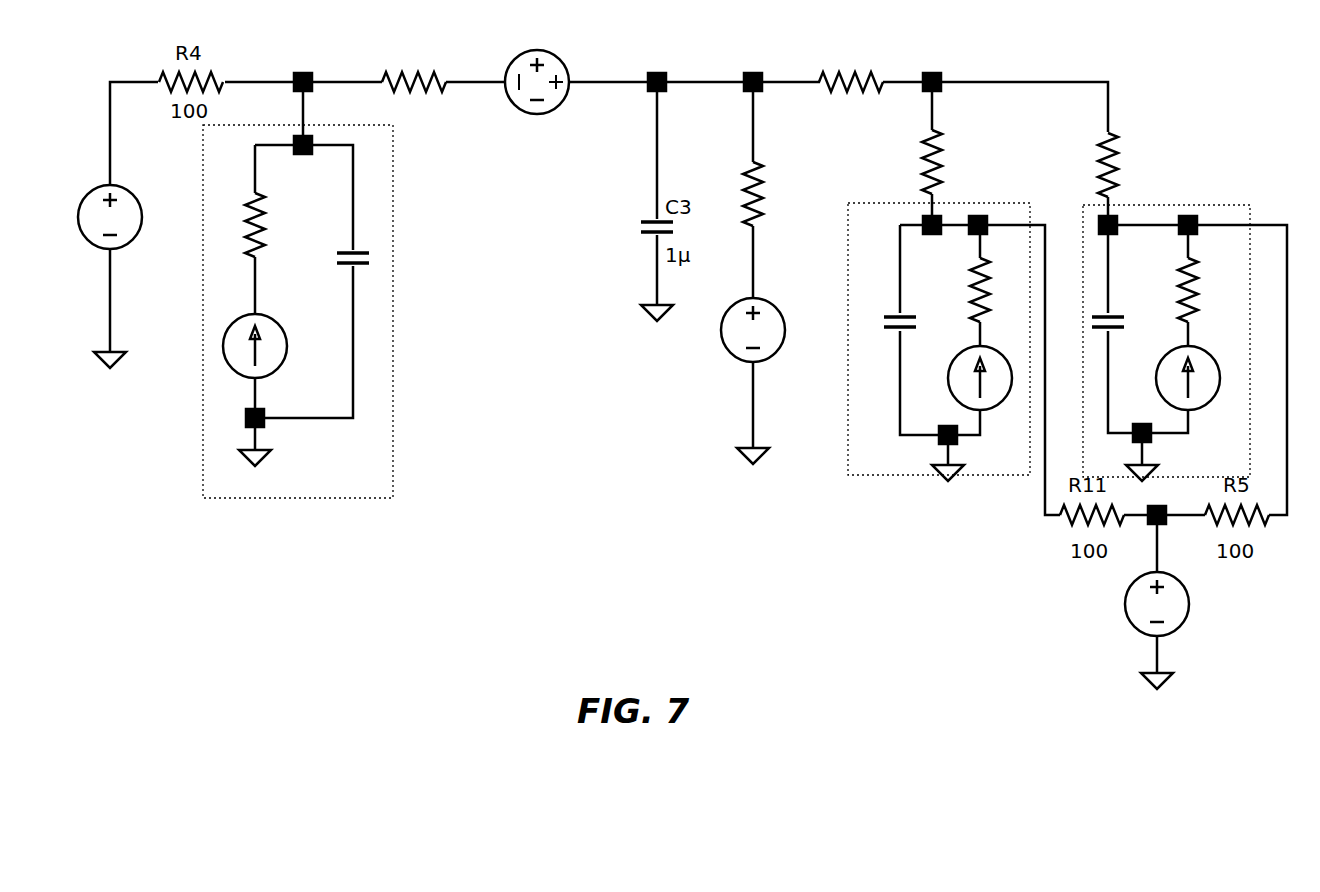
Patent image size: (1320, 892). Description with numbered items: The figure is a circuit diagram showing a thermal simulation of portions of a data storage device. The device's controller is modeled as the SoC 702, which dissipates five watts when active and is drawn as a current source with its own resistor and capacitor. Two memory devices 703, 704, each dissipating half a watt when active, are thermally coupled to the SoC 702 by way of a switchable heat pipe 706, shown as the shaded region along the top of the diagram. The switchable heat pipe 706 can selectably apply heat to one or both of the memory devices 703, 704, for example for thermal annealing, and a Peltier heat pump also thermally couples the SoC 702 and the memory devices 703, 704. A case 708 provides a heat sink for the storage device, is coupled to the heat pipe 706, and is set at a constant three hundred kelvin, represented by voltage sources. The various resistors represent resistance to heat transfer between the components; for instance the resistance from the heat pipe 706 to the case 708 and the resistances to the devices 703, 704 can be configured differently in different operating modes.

The SoC 702 is at (224, 496).
The memory device 703 is at (1190, 200).
The memory device 704 is at (988, 482).
The switchable heat pipe 706 is at (593, 116).
The case 708 is at (80, 244).